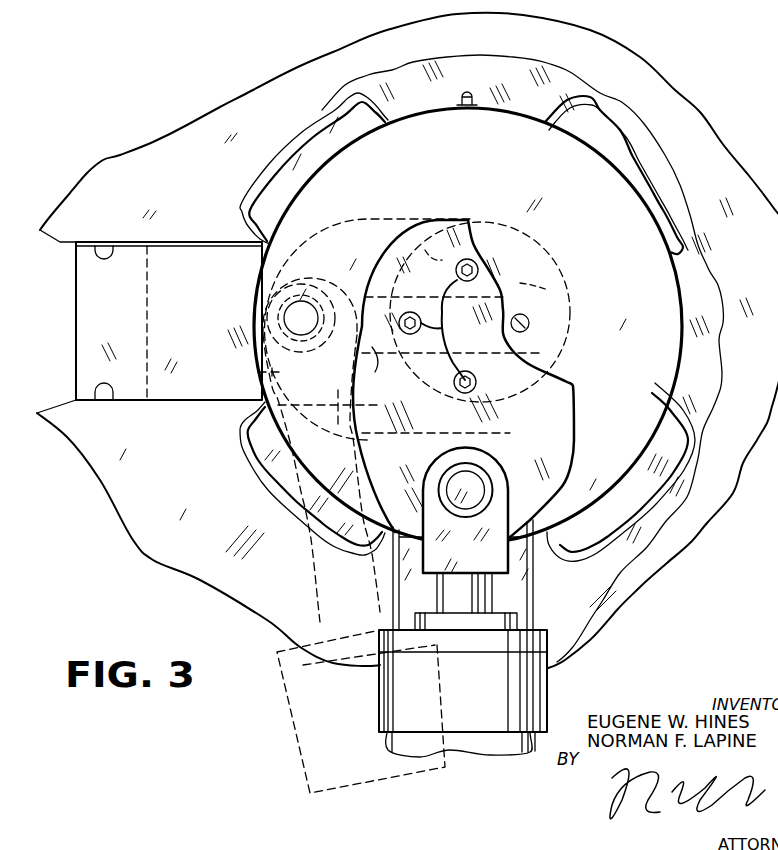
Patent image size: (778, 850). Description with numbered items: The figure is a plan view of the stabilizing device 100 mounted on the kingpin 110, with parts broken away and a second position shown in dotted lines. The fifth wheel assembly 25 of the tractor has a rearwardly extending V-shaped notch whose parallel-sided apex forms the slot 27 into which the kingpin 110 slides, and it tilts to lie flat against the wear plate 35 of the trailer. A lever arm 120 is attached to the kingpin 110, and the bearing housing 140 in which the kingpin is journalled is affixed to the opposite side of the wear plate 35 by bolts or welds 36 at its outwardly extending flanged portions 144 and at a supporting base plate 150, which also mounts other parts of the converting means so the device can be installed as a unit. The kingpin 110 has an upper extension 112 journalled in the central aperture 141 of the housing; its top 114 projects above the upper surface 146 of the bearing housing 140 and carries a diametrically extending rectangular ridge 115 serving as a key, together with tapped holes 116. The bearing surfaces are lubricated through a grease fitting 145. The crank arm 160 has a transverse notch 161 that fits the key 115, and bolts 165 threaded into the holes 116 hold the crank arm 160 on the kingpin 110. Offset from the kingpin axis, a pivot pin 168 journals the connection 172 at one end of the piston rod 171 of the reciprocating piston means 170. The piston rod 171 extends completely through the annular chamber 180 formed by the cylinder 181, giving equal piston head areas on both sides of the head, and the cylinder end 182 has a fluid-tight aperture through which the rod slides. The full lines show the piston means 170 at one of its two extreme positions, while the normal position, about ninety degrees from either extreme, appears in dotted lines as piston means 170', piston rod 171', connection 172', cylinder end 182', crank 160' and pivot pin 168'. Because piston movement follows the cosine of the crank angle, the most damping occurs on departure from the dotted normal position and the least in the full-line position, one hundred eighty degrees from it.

The fifth wheel assembly 25 is at (153, 487).
The notch or slot 27 is at (115, 242).
The wear plate 35 is at (703, 300).
The bolts and/or welds 36 is at (298, 137).
The stabilizing device 100 is at (323, 711).
The kingpin 110 is at (507, 247).
The extension 112 is at (530, 257).
The upper end or top 114 is at (490, 263).
The rectangular ridge 115 is at (527, 307).
The tapped holes 116 is at (530, 324).
The lever arm 120 is at (212, 325).
The bearing housing 140 is at (468, 292).
The central aperture 141 is at (425, 250).
The flanged portions 144 is at (283, 193).
The grease fitting 145 is at (467, 92).
The upper surface 146 is at (468, 326).
The base plate 150 is at (413, 621).
The crank arm 160 is at (452, 376).
The crank arm (normal position) 160' is at (367, 306).
The transverse notch 161 is at (380, 372).
The bolts 165 is at (451, 330).
The pivot pin 168 is at (465, 510).
The pivot pin (normal position) 168' is at (301, 299).
The piston means 170 is at (435, 575).
The piston means (normal position) 170' is at (282, 450).
The piston rod 171 is at (506, 600).
The piston rod (normal position) 171' is at (332, 395).
The connection 172 is at (504, 580).
The connection (normal position) 172' is at (242, 374).
The annular chamber 180 is at (553, 688).
The cylinder 181 is at (385, 743).
The cylinder end 182 is at (463, 678).
The motor (alternate position) 182' is at (323, 711).